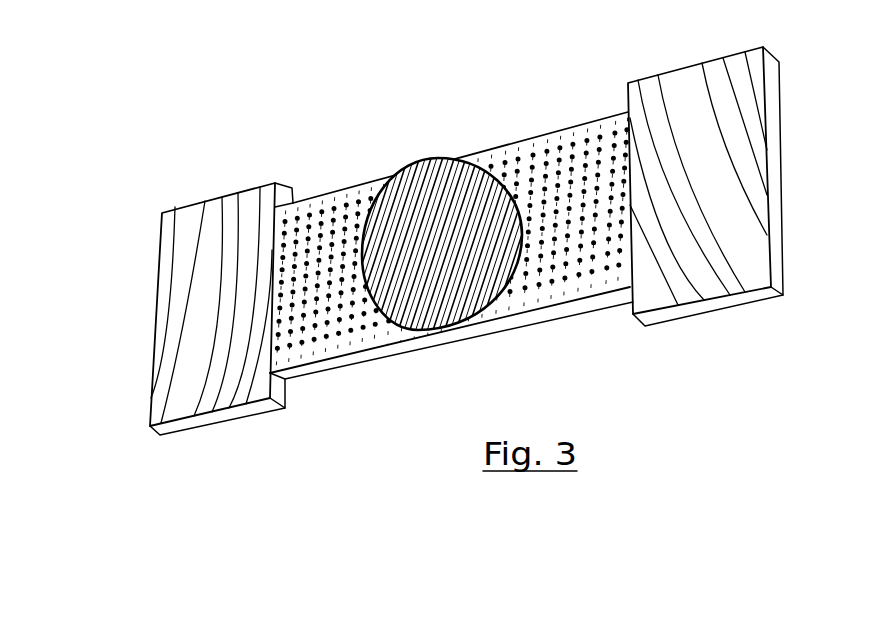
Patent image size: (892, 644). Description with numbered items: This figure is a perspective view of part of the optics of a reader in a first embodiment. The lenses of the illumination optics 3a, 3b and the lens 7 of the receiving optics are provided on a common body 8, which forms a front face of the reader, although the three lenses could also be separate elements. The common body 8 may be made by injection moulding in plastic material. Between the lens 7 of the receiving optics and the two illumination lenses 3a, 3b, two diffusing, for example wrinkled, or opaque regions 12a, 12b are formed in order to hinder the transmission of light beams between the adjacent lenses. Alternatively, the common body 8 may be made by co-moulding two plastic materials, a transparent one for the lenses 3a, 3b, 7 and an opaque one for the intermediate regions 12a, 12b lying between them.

The common body 8 is at (156, 176).
The lens of the illumination optics 3a is at (160, 388).
The lens of the illumination optics 3b is at (705, 282).
The diffusing or opaque region 12a is at (355, 188).
The diffusing or opaque region 12b is at (577, 127).
The lens of the receiving optics 7 is at (446, 166).